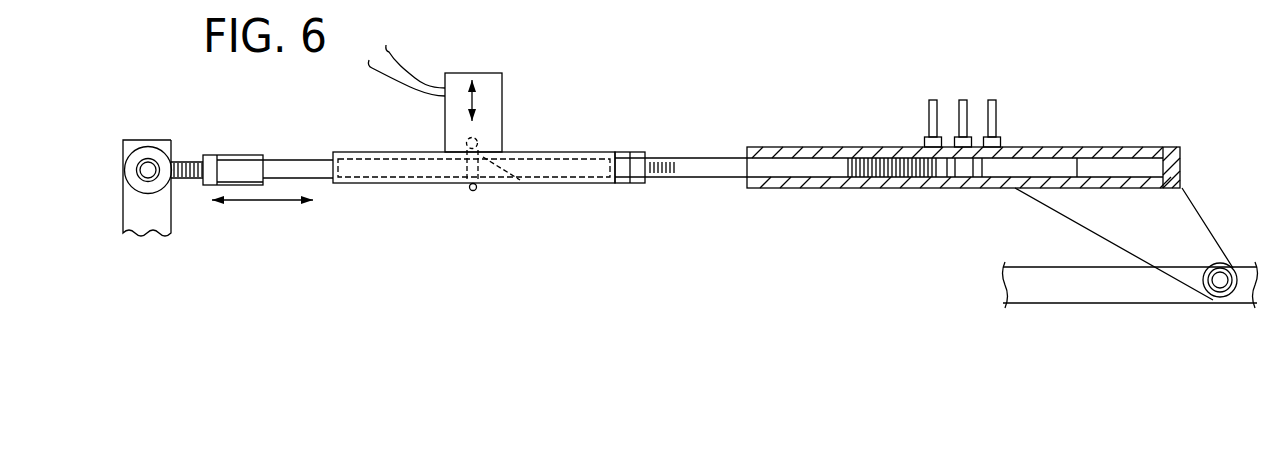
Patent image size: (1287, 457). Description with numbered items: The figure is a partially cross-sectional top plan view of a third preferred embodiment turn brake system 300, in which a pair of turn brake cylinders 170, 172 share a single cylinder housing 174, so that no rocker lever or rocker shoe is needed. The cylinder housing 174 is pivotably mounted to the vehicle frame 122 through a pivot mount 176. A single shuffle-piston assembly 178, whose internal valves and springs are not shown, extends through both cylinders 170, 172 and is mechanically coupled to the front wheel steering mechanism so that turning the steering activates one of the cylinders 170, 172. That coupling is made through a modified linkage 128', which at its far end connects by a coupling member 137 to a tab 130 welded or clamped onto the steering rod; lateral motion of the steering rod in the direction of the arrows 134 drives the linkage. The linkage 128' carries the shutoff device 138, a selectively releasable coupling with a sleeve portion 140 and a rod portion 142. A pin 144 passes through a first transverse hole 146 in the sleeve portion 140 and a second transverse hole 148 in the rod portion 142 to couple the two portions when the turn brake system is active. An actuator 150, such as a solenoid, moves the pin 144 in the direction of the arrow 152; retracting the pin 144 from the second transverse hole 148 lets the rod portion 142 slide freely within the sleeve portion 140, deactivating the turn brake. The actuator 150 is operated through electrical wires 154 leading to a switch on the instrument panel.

The frame 122 is at (1038, 273).
The modified linkage 128' is at (667, 111).
The tab 130 is at (162, 212).
The arrows 134 is at (257, 203).
The coupling 137 is at (223, 157).
The shutoff device 138 is at (532, 58).
The sleeve portion 140 is at (367, 152).
The rod portion 142 is at (285, 163).
The pin 144 is at (473, 191).
The first transverse hole 146 is at (448, 153).
The second transverse hole 148 is at (520, 180).
The actuator 150 is at (537, 100).
The arrow 152 is at (475, 80).
The electrical wires 154 is at (421, 90).
The turn brake cylinder 170 is at (915, 165).
The turn brake cylinder 172 is at (1018, 167).
The cylinder housing 174 is at (1110, 142).
The pivot mount 176 is at (1220, 277).
The shuffle-piston assembly 178 is at (877, 153).
The turn brake system 300 is at (762, 63).